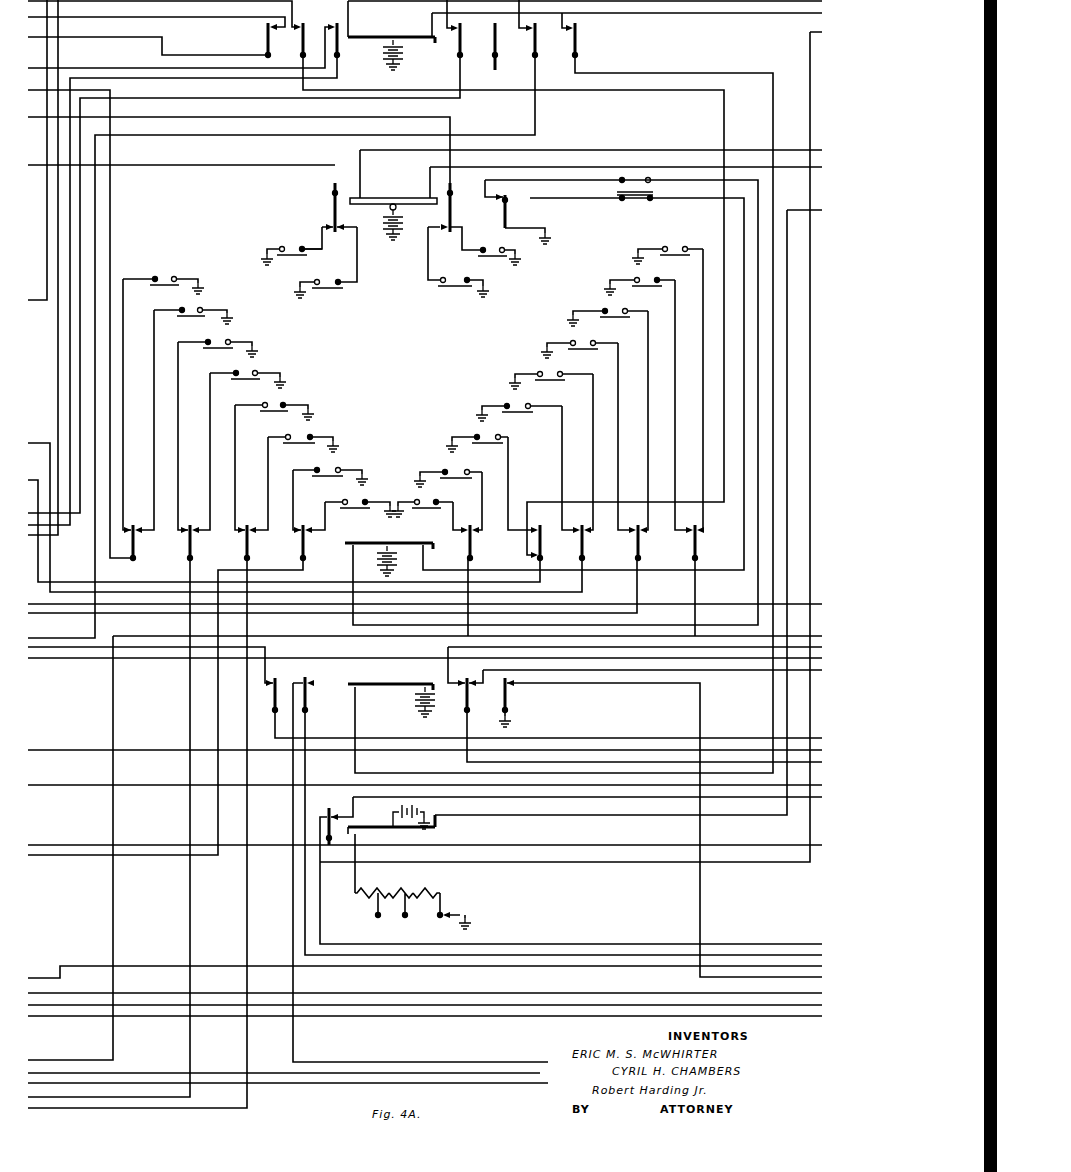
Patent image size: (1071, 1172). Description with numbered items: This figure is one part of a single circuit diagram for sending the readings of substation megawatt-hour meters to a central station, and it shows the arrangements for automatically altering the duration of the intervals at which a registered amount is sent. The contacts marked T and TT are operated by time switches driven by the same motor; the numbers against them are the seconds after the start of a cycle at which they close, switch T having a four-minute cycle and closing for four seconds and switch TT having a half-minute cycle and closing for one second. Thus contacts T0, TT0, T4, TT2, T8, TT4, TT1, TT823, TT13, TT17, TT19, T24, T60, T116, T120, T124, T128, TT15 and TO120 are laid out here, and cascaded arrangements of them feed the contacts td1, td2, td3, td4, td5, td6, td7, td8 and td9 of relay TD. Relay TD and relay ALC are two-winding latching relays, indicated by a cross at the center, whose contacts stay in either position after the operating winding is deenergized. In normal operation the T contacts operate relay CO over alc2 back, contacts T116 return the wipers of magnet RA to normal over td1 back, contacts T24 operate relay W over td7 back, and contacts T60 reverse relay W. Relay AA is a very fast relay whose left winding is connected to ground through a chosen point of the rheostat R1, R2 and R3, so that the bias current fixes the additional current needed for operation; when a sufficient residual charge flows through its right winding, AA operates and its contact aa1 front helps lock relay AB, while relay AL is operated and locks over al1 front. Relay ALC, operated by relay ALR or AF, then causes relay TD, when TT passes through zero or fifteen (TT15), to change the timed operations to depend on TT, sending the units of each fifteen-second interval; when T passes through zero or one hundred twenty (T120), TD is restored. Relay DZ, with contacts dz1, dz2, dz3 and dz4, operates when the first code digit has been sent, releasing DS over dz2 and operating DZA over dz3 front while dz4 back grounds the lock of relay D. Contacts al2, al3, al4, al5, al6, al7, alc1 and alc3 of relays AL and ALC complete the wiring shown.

The relay AL is at (391, 45).
The relay ALC is at (393, 209).
The relay TD is at (389, 552).
The relay DZ is at (391, 690).
The relay AA is at (391, 818).
The contact al1 is at (275, 41).
The contact al2 is at (310, 41).
The contact al3 is at (344, 41).
The contact al4 is at (467, 41).
The contact al5 is at (502, 46).
The contact al6 is at (542, 41).
The contact al7 is at (582, 41).
The contact alc1 is at (324, 232).
The contact alc2 is at (454, 230).
The contact alc3 is at (527, 219).
The contact td1 is at (141, 544).
The contact td2 is at (198, 544).
The contact td3 is at (255, 544).
The contact td4 is at (311, 544).
The contact td5 is at (478, 544).
The contact td6 is at (548, 544).
The contact td7 is at (590, 544).
The contact td8 is at (646, 544).
The contact td9 is at (703, 544).
The contact dz1 is at (283, 695).
The contact dz2 is at (313, 695).
The contact dz3 is at (475, 695).
The contact dz4 is at (511, 702).
The contact aa1 is at (337, 826).
The rheostat R1 is at (372, 896).
The rheostat R2 is at (401, 896).
The rheostat R3 is at (442, 901).
The time switch contact T 120 T120 is at (298, 248).
The time switch contact TT 15 TT15 is at (318, 280).
The time switch contact T 0 T0 is at (499, 248).
The time switch contact TT 0 TT0 is at (462, 281).
The time switch contacts T 116 and 236 T116 is at (162, 277).
The time switch contacts TT 13 and 28 TT13 is at (193, 308).
The time switch contact T 4 T4 is at (218, 340).
The time switch contact TT 2 TT2 is at (248, 372).
The time switch contact T 128 T128 is at (274, 404).
The time switch contact TT 19 TT19 is at (303, 435).
The time switch contact T 124 T124 is at (330, 468).
The time switch contact TT 17 TT17 is at (360, 500).
The time switch contact TT 4 TT4 is at (422, 500).
The time switch contact T 8 T8 is at (448, 469).
The time switch contacts TT 1 and 16 TT1 is at (493, 436).
The time switch contacts TT 8 and 23 TT823 is at (519, 405).
The time switch contacts T 24 and 144 T24 is at (551, 373).
The time switch contacts T 60 and 180 T60 is at (607, 311).
The time switch contacts T 0 and 120 TO120 is at (667, 247).